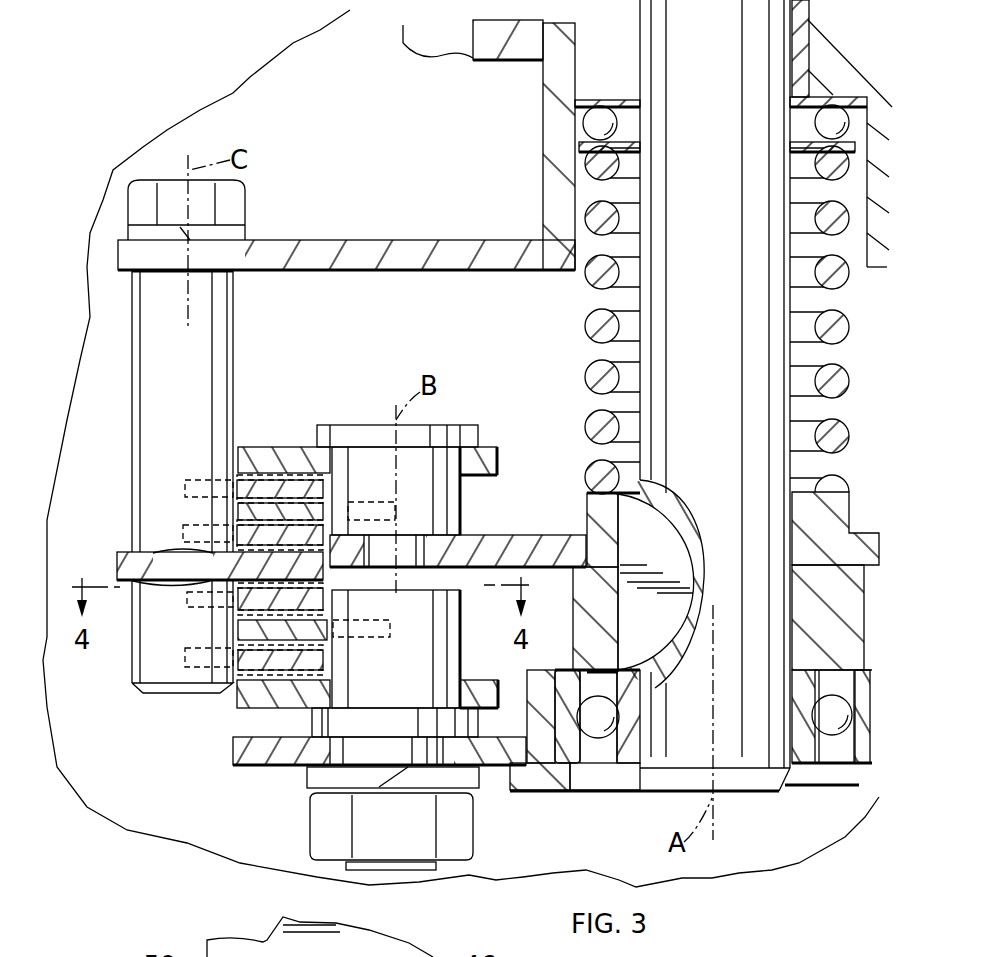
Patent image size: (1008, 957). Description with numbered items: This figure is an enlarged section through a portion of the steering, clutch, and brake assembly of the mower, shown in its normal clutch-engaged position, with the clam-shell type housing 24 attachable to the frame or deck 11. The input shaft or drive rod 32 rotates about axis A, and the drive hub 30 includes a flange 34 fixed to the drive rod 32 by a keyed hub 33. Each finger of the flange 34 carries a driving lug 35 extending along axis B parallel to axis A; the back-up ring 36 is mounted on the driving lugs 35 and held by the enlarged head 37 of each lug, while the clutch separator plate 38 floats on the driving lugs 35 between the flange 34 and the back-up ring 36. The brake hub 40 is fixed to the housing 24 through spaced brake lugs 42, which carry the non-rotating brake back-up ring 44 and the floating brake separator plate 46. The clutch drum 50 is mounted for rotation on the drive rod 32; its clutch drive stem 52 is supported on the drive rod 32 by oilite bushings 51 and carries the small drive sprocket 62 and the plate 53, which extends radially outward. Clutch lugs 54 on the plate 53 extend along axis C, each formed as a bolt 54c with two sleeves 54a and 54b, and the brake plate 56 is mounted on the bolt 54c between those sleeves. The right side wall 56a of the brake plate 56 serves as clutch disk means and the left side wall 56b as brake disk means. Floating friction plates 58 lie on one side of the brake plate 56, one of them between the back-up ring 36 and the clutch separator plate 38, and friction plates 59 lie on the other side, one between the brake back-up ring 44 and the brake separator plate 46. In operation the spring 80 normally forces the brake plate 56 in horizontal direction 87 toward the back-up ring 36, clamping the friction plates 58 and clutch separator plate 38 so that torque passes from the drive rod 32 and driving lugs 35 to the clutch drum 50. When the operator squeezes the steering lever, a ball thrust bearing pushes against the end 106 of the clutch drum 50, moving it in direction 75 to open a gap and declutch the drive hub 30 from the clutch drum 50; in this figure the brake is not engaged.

The frame or deck 11 is at (253, 103).
The clam-shell type housing 24 is at (283, 761).
The drive hub 30 is at (512, 450).
The drive rod 32 is at (755, 757).
The keyed hub 33 is at (852, 637).
The flange 34 is at (523, 548).
The driving lug 35 is at (443, 497).
The back-up ring 36 is at (260, 453).
The enlarged head 37 is at (443, 434).
The clutch separator plate 38 is at (247, 512).
The brake hub 40 is at (235, 724).
The brake lug 42 is at (433, 665).
The brake back-up ring 44 is at (233, 741).
The brake separator plate 46 is at (203, 645).
The clutch drum 50 is at (372, 207).
The oilite bushing 51 is at (800, 67).
The clutch drive stem 52 is at (549, 127).
The plate 53 is at (485, 248).
The clutch lug 54 is at (122, 375).
The sleeve 54a is at (218, 333).
The sleeve 54b is at (148, 675).
The bolt 54c is at (170, 558).
The brake plate 56 is at (118, 560).
The right side wall 56a is at (272, 550).
The left side wall 56b is at (240, 593).
The friction plate 58 is at (320, 488).
The friction plate 59 is at (317, 600).
The small drive sprocket 62 is at (438, 27).
The direction 75 is at (865, 398).
The spring 80 is at (837, 330).
The horizontal direction 87 is at (537, 380).
The end of the clutch drum 106 is at (600, 68).